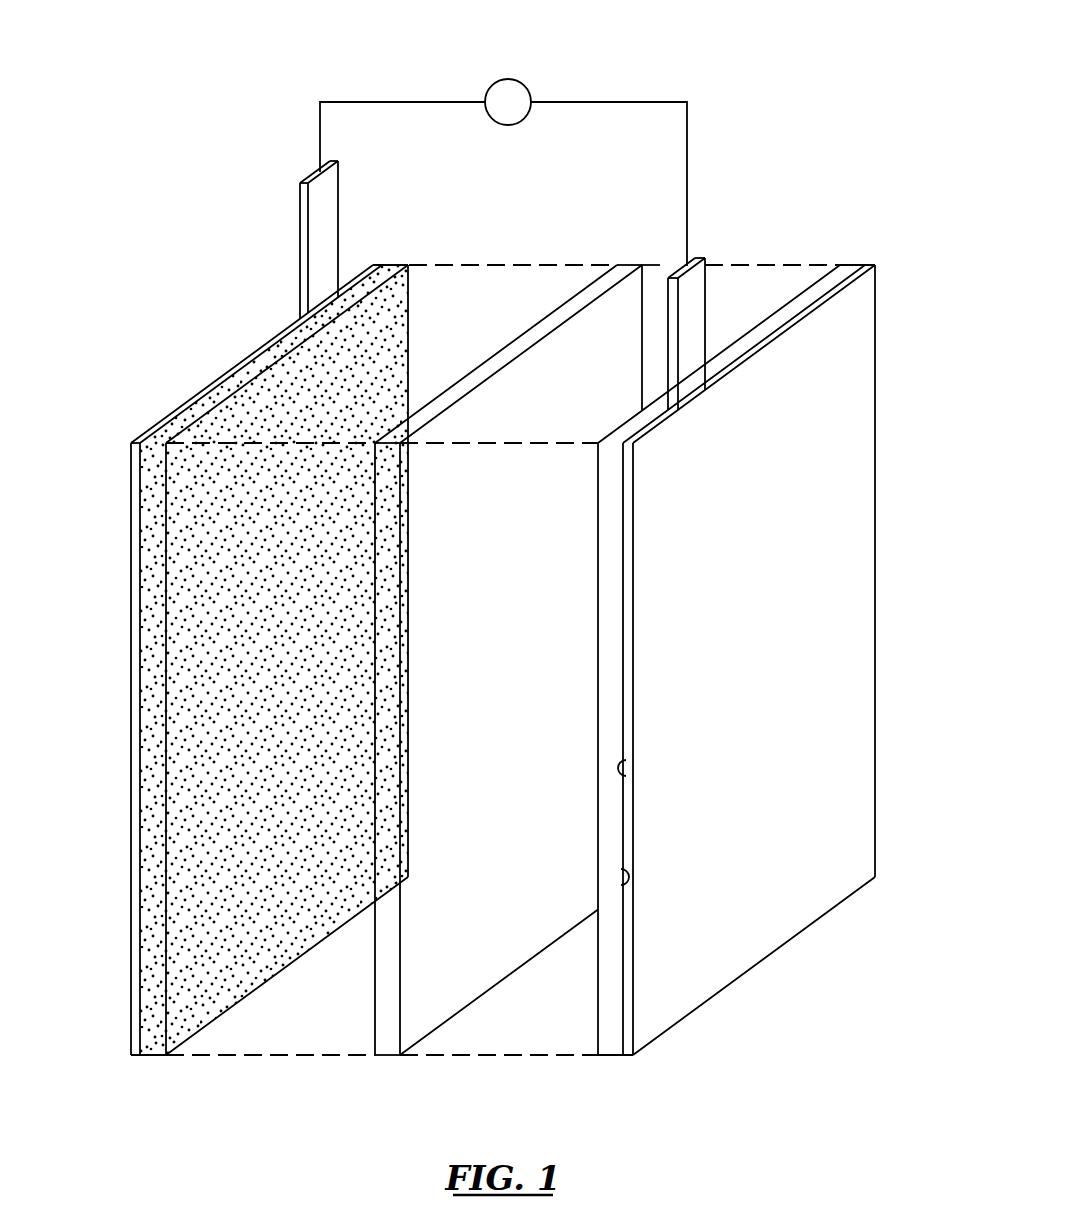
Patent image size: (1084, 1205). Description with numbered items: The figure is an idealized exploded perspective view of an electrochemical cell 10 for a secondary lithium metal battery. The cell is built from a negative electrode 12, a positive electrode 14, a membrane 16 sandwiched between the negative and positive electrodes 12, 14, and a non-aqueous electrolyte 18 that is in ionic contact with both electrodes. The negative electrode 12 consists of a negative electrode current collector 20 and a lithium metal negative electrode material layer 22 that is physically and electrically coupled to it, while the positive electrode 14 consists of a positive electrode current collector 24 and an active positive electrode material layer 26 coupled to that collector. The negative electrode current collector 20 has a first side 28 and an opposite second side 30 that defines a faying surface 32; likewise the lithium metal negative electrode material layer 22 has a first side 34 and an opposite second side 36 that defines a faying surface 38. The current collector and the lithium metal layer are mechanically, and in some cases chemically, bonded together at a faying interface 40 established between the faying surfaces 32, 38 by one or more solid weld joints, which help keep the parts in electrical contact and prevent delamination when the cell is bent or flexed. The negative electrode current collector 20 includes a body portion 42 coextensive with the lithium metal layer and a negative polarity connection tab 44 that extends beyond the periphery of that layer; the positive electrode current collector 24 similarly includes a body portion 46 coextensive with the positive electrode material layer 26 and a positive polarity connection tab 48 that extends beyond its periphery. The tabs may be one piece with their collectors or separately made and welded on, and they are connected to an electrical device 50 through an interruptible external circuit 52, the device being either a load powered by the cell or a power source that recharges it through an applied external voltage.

The electrochemical cell 10 is at (158, 292).
The negative electrode 12 is at (728, 661).
The positive electrode 14 is at (233, 608).
The membrane 16 is at (375, 1025).
The non-aqueous electrolyte 18 is at (290, 1038).
The negative electrode current collector 20 is at (728, 661).
The lithium metal negative electrode material layer 22 is at (852, 264).
The positive electrode current collector 24 is at (211, 660).
The active positive electrode material layer 26 is at (387, 263).
The first side 28 is at (641, 655).
The second side 30 is at (615, 655).
The faying surface 32 is at (626, 776).
The first side 34 is at (590, 840).
The second side 36 is at (632, 840).
The faying surface 38 is at (621, 885).
The faying interface 40 is at (626, 1066).
The body portion 42 is at (877, 670).
The negative polarity connection tab 44 is at (668, 375).
The body portion 46 is at (128, 853).
The positive polarity connection tab 48 is at (300, 247).
The electrical device 50 is at (524, 83).
The interruptible external circuit 52 is at (689, 145).